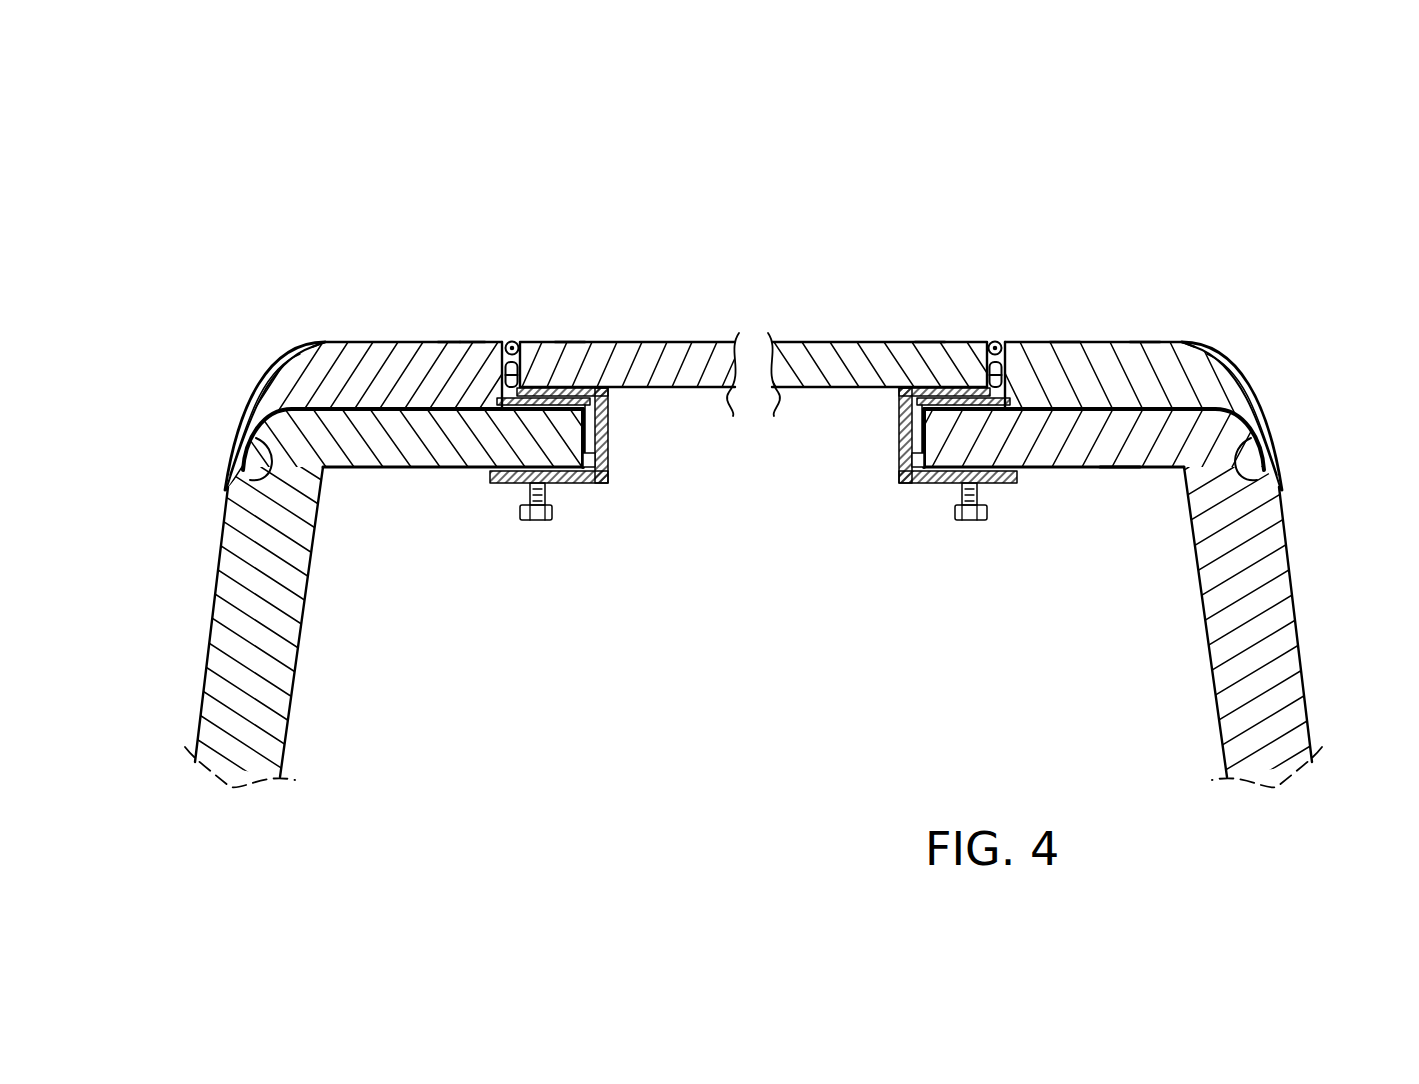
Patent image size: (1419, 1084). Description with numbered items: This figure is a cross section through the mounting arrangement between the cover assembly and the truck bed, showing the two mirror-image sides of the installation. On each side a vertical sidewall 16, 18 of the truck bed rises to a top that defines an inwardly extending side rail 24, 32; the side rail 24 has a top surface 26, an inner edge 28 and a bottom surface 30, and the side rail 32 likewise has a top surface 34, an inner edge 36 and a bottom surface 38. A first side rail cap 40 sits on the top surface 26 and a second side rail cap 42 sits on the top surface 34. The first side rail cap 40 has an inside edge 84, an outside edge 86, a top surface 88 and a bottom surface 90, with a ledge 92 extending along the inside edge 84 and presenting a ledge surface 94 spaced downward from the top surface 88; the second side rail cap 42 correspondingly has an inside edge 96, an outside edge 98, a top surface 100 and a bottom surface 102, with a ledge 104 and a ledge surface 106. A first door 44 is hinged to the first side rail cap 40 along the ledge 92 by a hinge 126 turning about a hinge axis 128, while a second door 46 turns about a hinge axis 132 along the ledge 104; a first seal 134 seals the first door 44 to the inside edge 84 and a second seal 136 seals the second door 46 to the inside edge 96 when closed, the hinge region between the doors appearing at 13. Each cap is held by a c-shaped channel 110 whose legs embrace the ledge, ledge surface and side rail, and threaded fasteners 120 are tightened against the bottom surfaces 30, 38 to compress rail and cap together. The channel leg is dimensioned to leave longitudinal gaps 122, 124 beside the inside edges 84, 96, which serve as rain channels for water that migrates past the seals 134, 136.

The seam between panels 13 is at (497, 338).
The sidewall 16 is at (1215, 680).
The sidewall 18 is at (293, 692).
The side rail 24 is at (1120, 468).
The top surface 26 is at (1192, 378).
The inner edge 28 is at (912, 470).
The bottom surface 30 is at (1075, 470).
The side rail 32 is at (389, 468).
The top surface 34 is at (312, 392).
The inner edge 36 is at (608, 470).
The bottom surface 38 is at (435, 470).
The first side rail cap 40 is at (1257, 398).
The second side rail cap 42 is at (257, 388).
The first door 44 is at (837, 340).
The second door 46 is at (665, 340).
The inside edge 84 is at (1060, 340).
The outside edge 86 is at (1262, 405).
The top surface 88 is at (1145, 340).
The bottom surface 90 is at (1265, 468).
The ledge 92 is at (913, 430).
The ledge surface 94 is at (930, 340).
The inside edge 96 is at (455, 338).
The outside edge 98 is at (262, 403).
The top surface 100 is at (347, 340).
The bottom surface 102 is at (242, 467).
The ledge 104 is at (598, 425).
The ledge surface 106 is at (570, 340).
The channel 110 is at (610, 468).
The threaded fastener 120 is at (550, 520).
The longitudinal gap 122 is at (1015, 400).
The longitudinal gap 124 is at (500, 400).
The hinge 126 is at (998, 340).
The hinge axis 128 is at (1005, 340).
The hinge axis 132 is at (513, 340).
The first seal 134 is at (1065, 340).
The second seal 136 is at (453, 338).